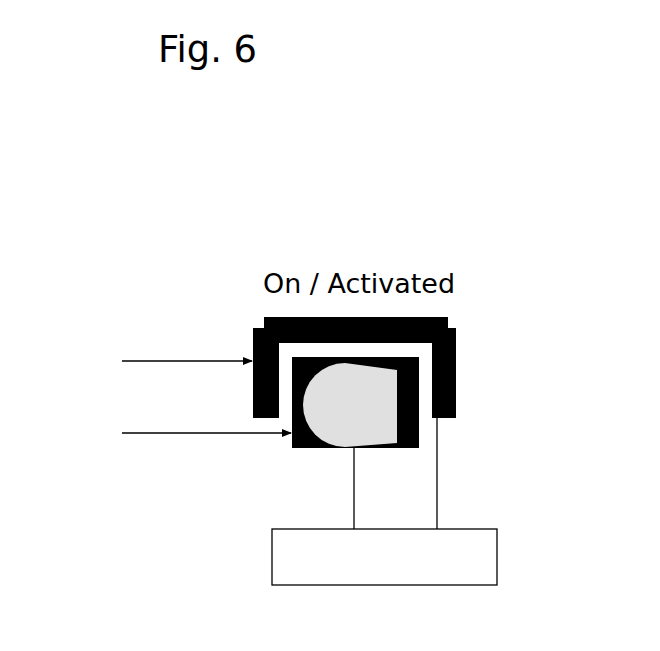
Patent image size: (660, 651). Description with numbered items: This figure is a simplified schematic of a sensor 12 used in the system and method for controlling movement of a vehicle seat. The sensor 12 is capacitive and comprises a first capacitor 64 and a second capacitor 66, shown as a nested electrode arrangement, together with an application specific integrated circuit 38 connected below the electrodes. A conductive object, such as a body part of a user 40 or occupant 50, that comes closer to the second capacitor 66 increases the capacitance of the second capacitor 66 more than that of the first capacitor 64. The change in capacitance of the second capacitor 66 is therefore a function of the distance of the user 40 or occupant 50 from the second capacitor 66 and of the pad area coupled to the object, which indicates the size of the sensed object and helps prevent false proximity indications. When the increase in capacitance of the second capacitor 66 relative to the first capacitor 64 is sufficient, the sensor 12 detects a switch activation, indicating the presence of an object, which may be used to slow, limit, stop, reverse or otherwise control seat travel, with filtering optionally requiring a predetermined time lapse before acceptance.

The sensor 12 is at (422, 278).
The application specific integrated circuit 38 is at (498, 558).
The user 40 is at (447, 405).
The occupant 50 is at (362, 400).
The capacitor C0 64 is at (139, 342).
The capacitor C1 66 is at (159, 417).